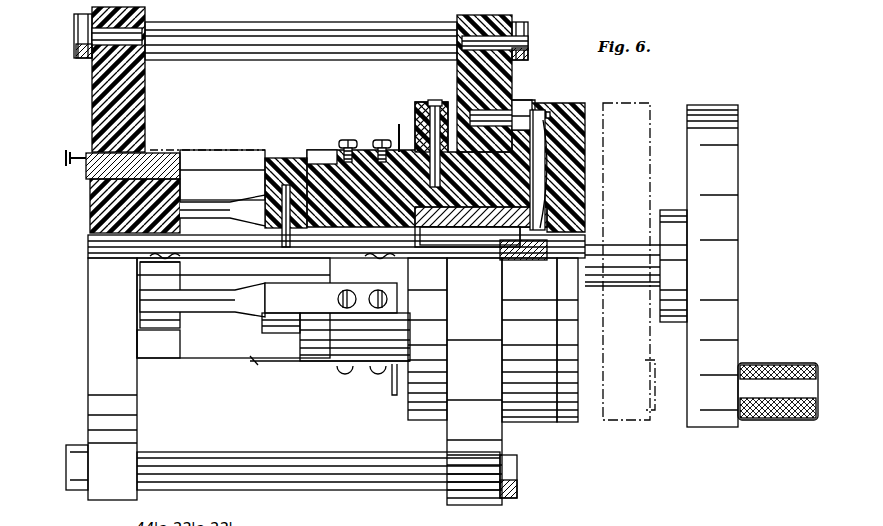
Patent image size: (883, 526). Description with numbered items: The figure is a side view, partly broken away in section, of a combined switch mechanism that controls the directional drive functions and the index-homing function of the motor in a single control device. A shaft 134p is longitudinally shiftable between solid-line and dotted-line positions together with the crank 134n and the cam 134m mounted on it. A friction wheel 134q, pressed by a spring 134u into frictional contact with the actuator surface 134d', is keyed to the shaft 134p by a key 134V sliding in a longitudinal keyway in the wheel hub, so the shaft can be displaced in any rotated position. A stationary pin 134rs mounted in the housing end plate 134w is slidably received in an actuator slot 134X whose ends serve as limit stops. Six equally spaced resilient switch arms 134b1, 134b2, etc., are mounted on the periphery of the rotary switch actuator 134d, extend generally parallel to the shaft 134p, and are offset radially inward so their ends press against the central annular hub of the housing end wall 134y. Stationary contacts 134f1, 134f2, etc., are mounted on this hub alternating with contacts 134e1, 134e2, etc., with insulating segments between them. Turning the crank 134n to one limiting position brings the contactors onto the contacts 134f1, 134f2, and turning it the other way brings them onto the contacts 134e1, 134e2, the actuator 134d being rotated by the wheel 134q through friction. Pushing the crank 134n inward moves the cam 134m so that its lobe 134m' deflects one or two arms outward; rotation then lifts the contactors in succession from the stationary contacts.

The housing end wall 134y is at (92, 98).
The housing end plate 134w is at (460, 21).
The stationary pin 134rs is at (466, 96).
The switch actuator 134d is at (449, 125).
The actuator slot 134X is at (538, 112).
The actuator surface 134d' is at (566, 156).
The friction wheel 134q is at (582, 142).
The spring 134u is at (582, 174).
The resilient switch arm 134b1 is at (240, 202).
The resilient switch arm 134b2 is at (251, 144).
The cam 134m is at (240, 237).
The cam lobe 134m' is at (349, 139).
The shaft 134p is at (72, 242).
The stationary switch contact 134e1 is at (140, 260).
The stationary switch contact 134e2 is at (140, 322).
The stationary switch contact 134f1 is at (145, 295).
The stationary switch contact 134f2 is at (330, 339).
The key 134V is at (505, 236).
The crank 134n is at (650, 103).